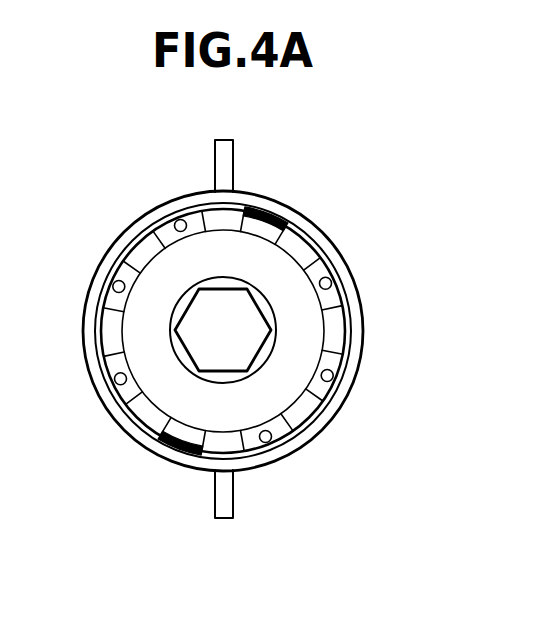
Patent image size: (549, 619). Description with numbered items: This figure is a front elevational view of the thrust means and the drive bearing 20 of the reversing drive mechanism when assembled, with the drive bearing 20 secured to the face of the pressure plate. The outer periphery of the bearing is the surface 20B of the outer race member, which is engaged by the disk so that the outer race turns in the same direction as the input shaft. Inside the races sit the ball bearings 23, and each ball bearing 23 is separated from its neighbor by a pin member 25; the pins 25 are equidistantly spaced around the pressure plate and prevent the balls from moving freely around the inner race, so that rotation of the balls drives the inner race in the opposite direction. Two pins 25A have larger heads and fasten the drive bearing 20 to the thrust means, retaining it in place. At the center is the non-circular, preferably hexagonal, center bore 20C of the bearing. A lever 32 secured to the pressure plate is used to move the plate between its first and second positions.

The drive bearing 20 is at (368, 193).
The surface of outer race member 20B is at (333, 258).
The center bore 20C is at (196, 306).
The ball bearings 23 is at (337, 333).
The pin members 25 is at (333, 282).
The pins with larger head 25A is at (262, 222).
The lever 32 is at (214, 153).